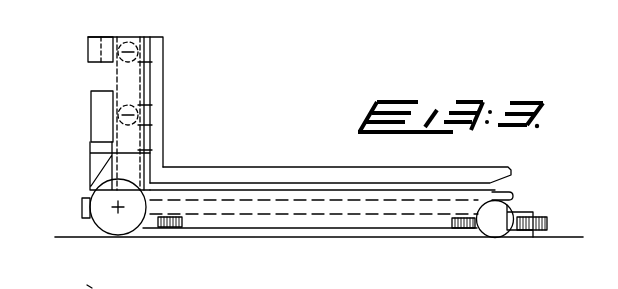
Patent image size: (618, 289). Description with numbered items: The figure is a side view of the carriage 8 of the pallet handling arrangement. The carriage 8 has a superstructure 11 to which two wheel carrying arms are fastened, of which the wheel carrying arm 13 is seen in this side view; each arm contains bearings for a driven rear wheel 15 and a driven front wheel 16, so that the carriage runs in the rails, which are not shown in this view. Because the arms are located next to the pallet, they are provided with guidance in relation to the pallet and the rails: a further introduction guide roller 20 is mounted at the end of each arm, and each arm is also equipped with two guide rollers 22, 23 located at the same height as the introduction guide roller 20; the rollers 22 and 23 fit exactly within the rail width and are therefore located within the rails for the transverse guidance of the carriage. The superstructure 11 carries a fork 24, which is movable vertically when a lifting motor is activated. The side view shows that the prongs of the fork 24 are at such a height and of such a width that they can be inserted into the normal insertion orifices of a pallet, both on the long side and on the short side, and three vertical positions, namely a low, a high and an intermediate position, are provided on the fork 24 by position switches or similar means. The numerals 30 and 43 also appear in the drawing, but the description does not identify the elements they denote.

The carriage 8 is at (82, 115).
The superstructure 11 is at (118, 43).
The wheel carrying arm 13 is at (300, 222).
The rear wheel 15 is at (122, 232).
The front wheel 16 is at (498, 237).
The guide roller 20 is at (535, 232).
The guide roller 22 is at (177, 232).
The guide roller 23 is at (457, 230).
The fork 24 is at (252, 172).
The lower member 30 is at (92, 288).
The drive element 43 is at (341, 283).